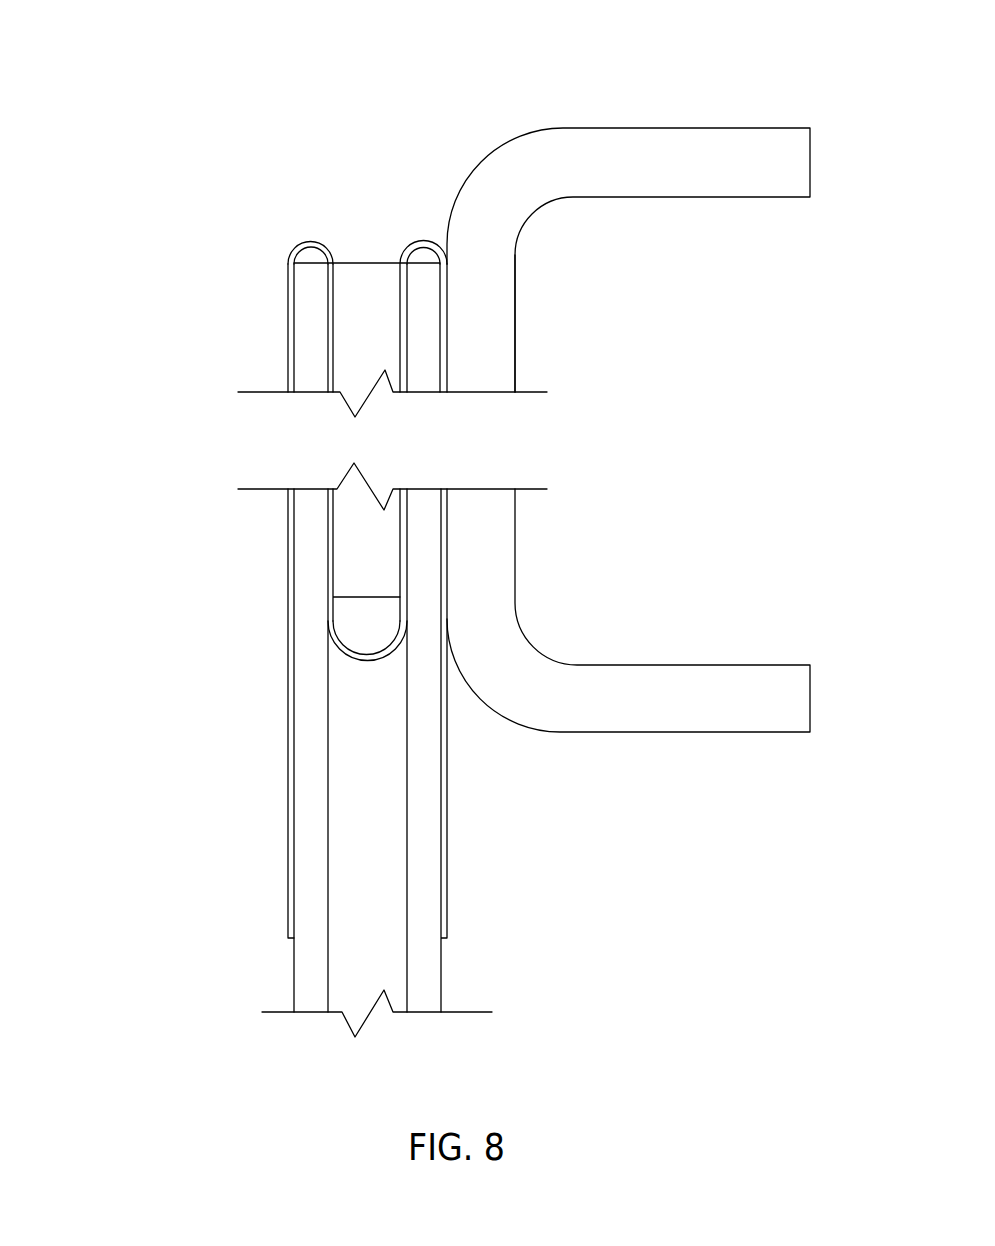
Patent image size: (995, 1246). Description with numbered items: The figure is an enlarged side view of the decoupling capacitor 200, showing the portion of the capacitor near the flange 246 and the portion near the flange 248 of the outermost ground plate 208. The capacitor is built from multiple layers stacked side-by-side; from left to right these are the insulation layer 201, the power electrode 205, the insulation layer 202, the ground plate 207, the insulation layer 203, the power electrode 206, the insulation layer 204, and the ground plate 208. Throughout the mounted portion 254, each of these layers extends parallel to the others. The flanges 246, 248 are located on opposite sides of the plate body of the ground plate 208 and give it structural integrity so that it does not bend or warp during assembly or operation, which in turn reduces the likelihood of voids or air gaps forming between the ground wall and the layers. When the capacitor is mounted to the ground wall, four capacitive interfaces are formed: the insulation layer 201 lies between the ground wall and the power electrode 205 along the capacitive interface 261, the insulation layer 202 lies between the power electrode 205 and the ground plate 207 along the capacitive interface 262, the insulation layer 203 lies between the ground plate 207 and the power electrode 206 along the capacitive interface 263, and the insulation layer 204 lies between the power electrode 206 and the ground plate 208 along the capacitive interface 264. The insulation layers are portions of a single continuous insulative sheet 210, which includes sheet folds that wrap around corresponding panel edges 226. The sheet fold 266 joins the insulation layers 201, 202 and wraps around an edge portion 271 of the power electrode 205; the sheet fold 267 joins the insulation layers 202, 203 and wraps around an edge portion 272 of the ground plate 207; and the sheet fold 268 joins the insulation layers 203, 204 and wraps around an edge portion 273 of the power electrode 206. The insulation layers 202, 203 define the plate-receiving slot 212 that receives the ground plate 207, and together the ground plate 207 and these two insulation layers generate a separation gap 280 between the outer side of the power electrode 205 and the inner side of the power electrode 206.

The decoupling capacitor 200 is at (735, 53).
The insulation layer 201 is at (288, 283).
The insulation layer 202 is at (338, 282).
The insulation layer 203 is at (398, 335).
The insulation layer 204 is at (447, 370).
The power electrode 205 is at (304, 357).
The power electrode 206 is at (425, 285).
The ground plate 207 is at (364, 273).
The ground plate 208 is at (515, 318).
The insulative sheet 210 is at (270, 640).
The plate-receiving slot 212 is at (332, 143).
The panel edge 226 is at (386, 623).
The flange 246 is at (621, 87).
The flange 248 is at (716, 761).
The mounted portion 254 is at (170, 127).
The capacitive interface 261 is at (278, 502).
The capacitive interface 262 is at (323, 501).
The capacitive interface 263 is at (392, 540).
The capacitive interface 264 is at (459, 554).
The sheet fold 266 is at (310, 247).
The sheet fold 267 is at (360, 600).
The sheet fold 268 is at (426, 247).
The edge portion 271 is at (307, 241).
The edge portion 272 is at (358, 661).
The edge portion 273 is at (412, 260).
The separation gap 280 is at (407, 812).